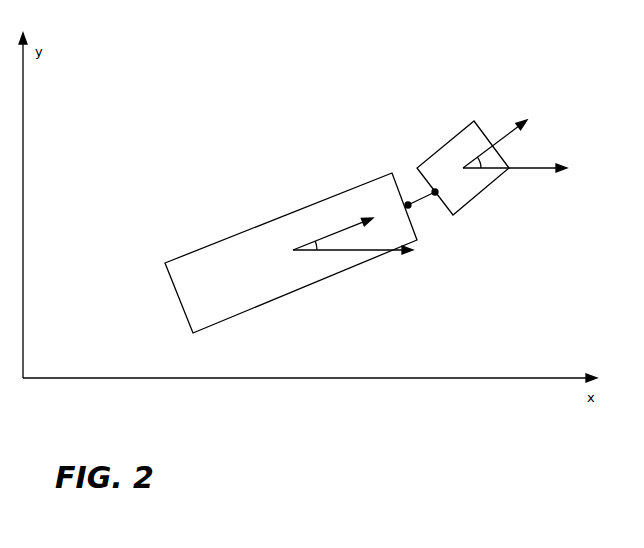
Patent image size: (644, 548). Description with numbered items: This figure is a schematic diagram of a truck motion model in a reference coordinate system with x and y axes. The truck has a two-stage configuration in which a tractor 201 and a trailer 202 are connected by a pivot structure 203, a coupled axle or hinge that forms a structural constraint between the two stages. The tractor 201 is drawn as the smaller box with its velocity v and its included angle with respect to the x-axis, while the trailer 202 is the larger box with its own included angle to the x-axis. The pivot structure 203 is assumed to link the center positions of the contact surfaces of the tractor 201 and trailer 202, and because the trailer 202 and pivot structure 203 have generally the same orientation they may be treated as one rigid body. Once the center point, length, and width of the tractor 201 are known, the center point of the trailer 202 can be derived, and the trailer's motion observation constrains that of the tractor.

The tractor 201 is at (440, 149).
The trailer 202 is at (237, 234).
The pivot structure 203 is at (417, 203).